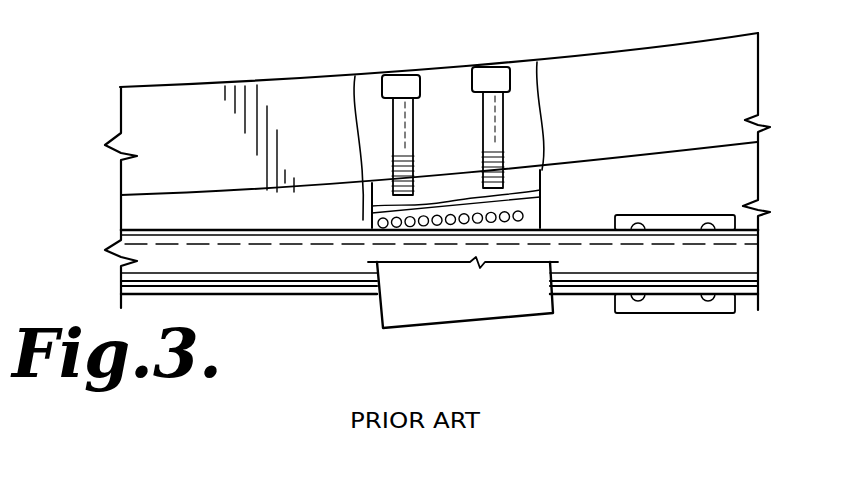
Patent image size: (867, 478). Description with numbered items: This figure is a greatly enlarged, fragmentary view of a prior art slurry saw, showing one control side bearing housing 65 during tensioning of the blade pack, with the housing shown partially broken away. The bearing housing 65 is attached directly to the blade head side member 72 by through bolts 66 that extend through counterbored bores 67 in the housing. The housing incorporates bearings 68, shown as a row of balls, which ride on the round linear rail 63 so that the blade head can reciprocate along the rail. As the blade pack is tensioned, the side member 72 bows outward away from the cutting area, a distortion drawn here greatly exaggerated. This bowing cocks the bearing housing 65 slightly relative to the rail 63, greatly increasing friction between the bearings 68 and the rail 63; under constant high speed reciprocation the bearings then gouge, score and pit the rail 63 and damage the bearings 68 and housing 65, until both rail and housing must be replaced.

The side member 72 is at (242, 86).
The through bolt 66 is at (483, 136).
The counterbored bore 67 is at (489, 67).
The bearing 68 is at (372, 221).
The round linear rail 63 is at (350, 277).
The bearing housing 65 is at (451, 306).